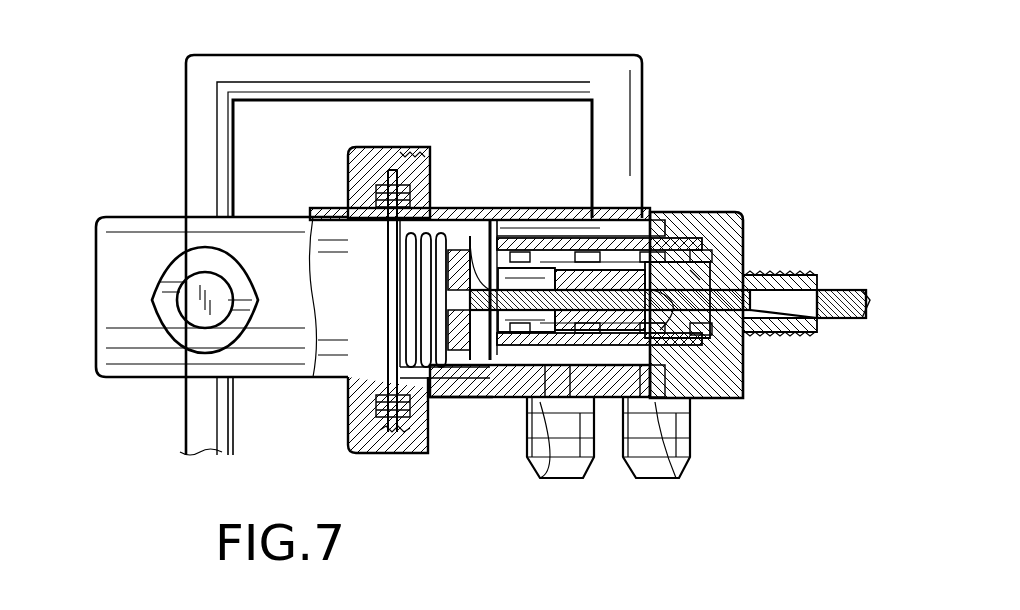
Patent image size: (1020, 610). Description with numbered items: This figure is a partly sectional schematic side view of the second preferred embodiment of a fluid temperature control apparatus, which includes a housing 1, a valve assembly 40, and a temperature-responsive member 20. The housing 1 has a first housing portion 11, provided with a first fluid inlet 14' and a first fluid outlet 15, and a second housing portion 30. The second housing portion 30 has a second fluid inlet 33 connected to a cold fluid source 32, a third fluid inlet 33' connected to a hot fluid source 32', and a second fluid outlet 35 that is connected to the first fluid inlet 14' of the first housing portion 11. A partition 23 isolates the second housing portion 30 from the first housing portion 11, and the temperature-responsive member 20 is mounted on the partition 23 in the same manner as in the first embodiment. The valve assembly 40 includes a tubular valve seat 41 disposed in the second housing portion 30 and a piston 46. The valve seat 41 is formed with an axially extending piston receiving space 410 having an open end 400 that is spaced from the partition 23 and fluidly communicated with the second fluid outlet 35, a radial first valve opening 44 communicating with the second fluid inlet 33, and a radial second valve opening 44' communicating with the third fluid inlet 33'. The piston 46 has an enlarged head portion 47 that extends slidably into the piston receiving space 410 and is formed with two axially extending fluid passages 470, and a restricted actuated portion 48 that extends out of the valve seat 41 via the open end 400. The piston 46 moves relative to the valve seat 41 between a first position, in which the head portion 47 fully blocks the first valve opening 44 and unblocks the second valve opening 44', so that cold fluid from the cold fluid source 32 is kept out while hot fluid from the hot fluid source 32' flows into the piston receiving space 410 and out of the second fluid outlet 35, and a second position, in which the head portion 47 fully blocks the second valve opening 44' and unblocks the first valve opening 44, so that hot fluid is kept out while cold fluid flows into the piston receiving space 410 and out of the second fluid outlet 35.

The housing 1 is at (456, 50).
The first housing portion 11 is at (168, 215).
The first fluid inlet 14' is at (410, 273).
The first fluid outlet 15 is at (192, 418).
The temperature-responsive member 20 is at (322, 312).
The partition 23 is at (387, 316).
The second housing portion 30 is at (700, 176).
The cold fluid source 32 is at (560, 466).
The hot fluid source 32' is at (656, 466).
The second fluid inlet 33 is at (505, 461).
The third fluid inlet 33' is at (733, 445).
The second fluid outlet 35 is at (596, 150).
The valve assembly 40 is at (744, 344).
The tubular valve seat 41 is at (702, 214).
The first valve opening 44 is at (514, 397).
The second valve opening 44' is at (727, 397).
The piston 46 is at (462, 318).
The enlarged head portion 47 is at (590, 236).
The restricted actuated portion 48 is at (450, 232).
The open end 400 is at (482, 236).
The piston receiving space 410 is at (744, 278).
The fluid passages 470 is at (640, 298).